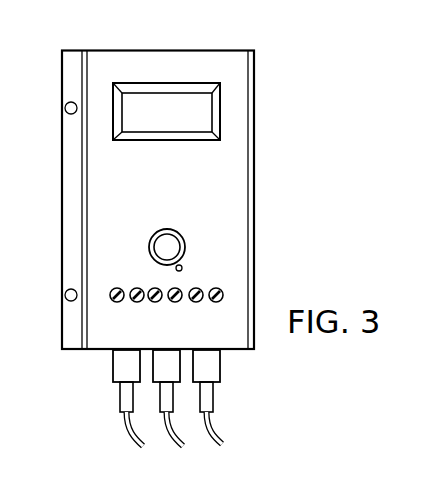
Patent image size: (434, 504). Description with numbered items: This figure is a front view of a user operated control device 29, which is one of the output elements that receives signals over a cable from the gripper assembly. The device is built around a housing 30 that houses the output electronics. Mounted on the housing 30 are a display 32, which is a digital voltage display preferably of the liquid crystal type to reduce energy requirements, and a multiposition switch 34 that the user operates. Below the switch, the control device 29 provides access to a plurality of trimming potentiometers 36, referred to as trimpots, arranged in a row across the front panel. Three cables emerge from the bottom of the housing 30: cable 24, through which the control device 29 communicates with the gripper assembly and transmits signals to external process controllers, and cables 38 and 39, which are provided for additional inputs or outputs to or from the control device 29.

The user operated control device 29 is at (174, 34).
The housing 30 is at (254, 203).
The display 32 is at (220, 117).
The multiposition switch 34 is at (185, 245).
The trimming potentiometers 36 is at (222, 293).
The cable 38 is at (122, 370).
The cable 39 is at (175, 443).
The cable 24 is at (213, 373).